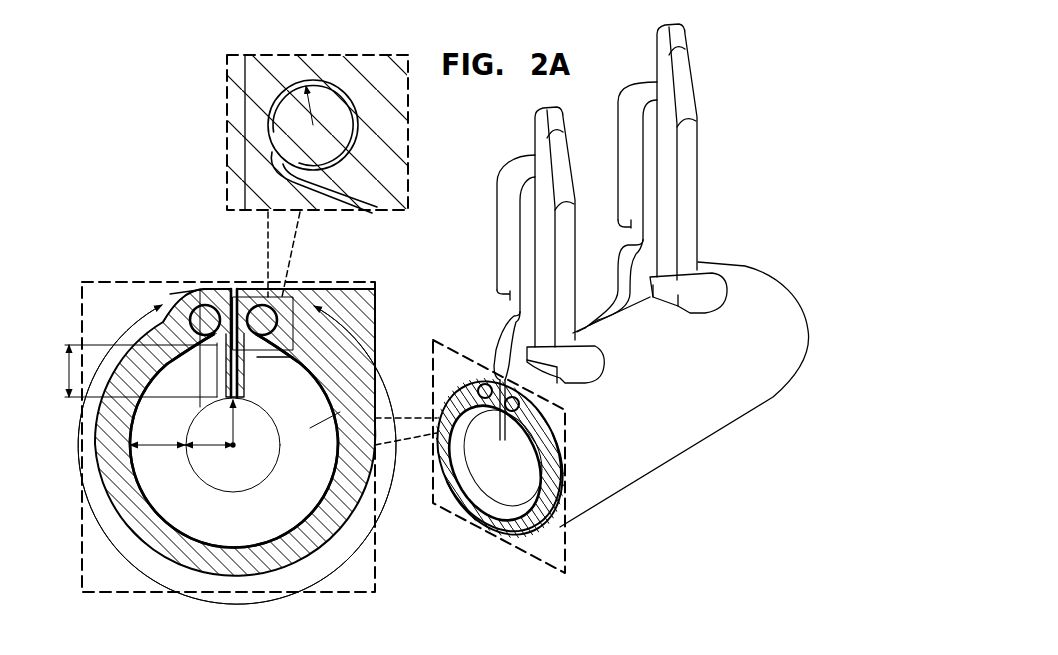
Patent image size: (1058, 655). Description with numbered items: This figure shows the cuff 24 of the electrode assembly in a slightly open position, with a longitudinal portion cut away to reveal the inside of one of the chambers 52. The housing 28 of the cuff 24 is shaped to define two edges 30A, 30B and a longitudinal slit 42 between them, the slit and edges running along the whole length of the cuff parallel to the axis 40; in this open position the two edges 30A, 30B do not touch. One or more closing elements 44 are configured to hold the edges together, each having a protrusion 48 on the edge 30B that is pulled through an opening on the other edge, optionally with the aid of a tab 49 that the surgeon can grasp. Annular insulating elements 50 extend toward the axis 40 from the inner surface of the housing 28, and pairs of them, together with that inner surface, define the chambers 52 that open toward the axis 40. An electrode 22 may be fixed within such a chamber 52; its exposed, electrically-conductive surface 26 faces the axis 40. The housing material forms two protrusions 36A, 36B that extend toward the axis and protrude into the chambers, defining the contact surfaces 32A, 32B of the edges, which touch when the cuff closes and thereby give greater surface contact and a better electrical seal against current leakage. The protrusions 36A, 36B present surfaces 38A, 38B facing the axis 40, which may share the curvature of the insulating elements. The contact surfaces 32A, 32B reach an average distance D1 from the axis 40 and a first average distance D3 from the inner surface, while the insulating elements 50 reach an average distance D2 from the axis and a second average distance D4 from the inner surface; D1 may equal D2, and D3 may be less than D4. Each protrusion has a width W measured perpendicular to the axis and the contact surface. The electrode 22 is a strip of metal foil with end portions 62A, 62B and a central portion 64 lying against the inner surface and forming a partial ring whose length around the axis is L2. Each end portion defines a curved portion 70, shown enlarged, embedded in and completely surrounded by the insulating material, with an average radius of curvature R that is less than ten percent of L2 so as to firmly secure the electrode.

The electrode 22 is at (286, 530).
The cuff 24 is at (118, 310).
The exposed surface 26 is at (522, 537).
The housing 28 is at (295, 593).
The edge 30A is at (230, 288).
The edge 30B is at (238, 288).
The contact surface 32A is at (207, 378).
The contact surface 32B is at (250, 388).
The protrusion 36A is at (187, 354).
The protrusion 36B is at (345, 318).
The surface 38A is at (205, 403).
The surface 38B is at (268, 424).
The axis 40 is at (233, 447).
The longitudinal slit 42 is at (152, 357).
The closing element 44 is at (497, 220).
The protrusion 48 is at (580, 377).
The tab 49 is at (545, 108).
The annular insulating element 50 is at (310, 428).
The chamber 52 is at (300, 501).
The end portion 62A is at (182, 296).
The end portion 62B is at (290, 292).
The central portion 64 is at (190, 523).
The curved portion 70 is at (200, 305).
The average distance D1 is at (242, 422).
The average distance D2 is at (209, 438).
The first average distance D3 is at (132, 371).
The second average distance D4 is at (157, 438).
The width W is at (295, 357).
The length L2 is at (278, 601).
The average radius of curvature R is at (342, 103).